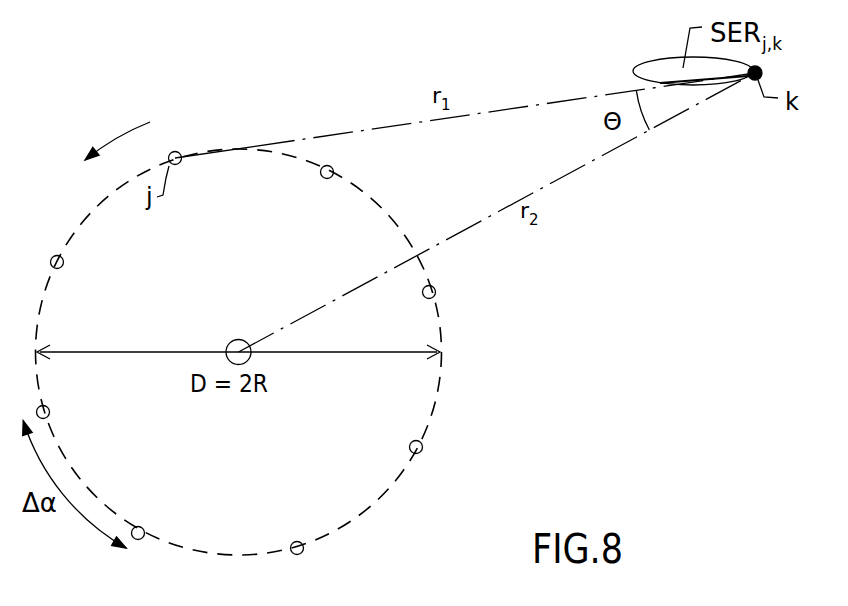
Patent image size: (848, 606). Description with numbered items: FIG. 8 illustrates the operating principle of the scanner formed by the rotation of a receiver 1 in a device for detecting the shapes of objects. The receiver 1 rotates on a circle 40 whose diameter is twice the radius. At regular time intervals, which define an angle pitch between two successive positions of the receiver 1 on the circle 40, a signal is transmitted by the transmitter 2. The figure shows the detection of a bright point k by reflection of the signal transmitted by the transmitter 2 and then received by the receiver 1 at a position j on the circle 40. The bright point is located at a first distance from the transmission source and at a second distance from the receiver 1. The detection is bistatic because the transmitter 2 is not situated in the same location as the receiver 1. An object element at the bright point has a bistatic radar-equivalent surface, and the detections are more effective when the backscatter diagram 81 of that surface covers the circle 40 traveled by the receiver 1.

The receiver 1 is at (236, 349).
The transmitter 2 is at (231, 329).
The circle 40 is at (239, 352).
The backscatter diagram 81 is at (705, 106).